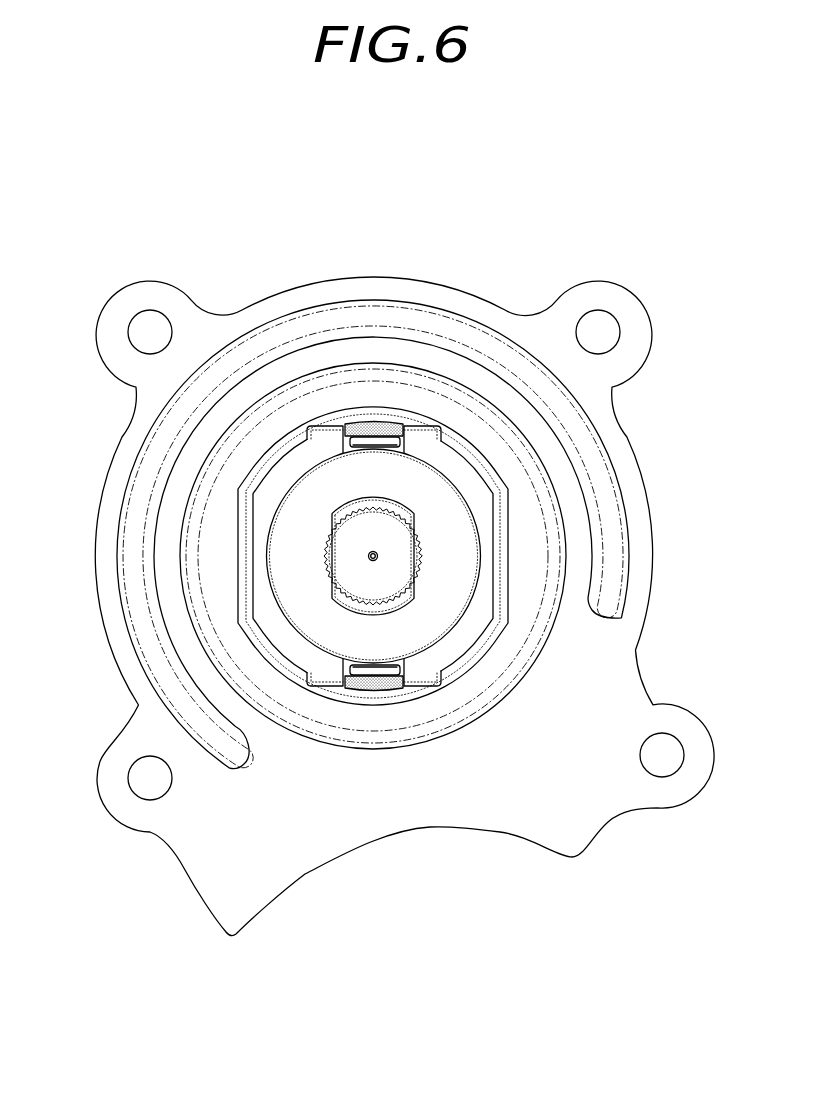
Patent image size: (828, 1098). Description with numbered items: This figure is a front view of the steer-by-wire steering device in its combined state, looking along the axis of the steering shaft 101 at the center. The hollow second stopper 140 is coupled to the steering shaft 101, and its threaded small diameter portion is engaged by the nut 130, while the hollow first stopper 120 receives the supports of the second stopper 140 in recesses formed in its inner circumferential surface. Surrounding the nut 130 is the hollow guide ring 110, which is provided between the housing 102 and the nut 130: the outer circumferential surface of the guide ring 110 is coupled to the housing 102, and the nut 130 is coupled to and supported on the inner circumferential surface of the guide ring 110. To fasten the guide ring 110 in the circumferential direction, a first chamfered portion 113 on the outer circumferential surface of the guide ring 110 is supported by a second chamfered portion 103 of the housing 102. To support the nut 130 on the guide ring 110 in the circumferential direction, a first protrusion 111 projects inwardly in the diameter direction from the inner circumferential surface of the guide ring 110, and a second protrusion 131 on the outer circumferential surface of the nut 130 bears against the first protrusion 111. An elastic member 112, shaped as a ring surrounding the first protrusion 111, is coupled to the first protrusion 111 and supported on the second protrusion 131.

The steering shaft 101 is at (407, 573).
The housing 102 is at (128, 659).
The second chamfered portion 103 is at (236, 582).
The guide ring 110 is at (508, 548).
The first protrusion 111 is at (369, 437).
The elastic member 112 is at (384, 427).
The first chamfered portion 113 is at (238, 510).
The first stopper 120 is at (457, 590).
The nut 130 is at (456, 460).
The second protrusion 131 is at (323, 437).
The second stopper 140 is at (348, 500).